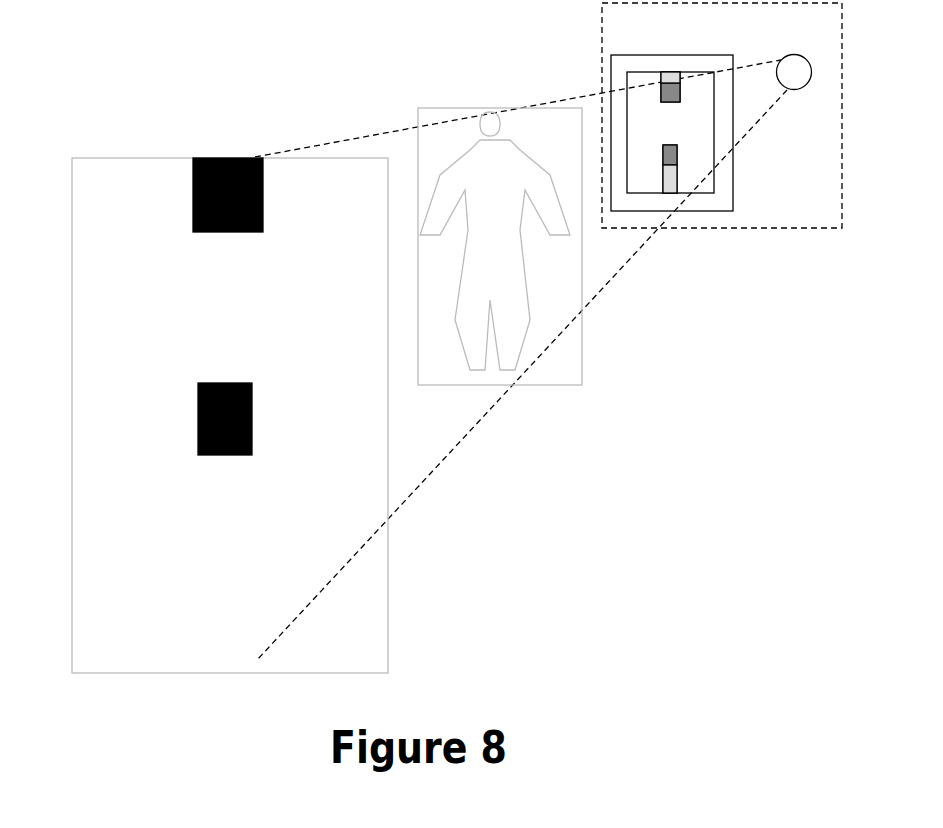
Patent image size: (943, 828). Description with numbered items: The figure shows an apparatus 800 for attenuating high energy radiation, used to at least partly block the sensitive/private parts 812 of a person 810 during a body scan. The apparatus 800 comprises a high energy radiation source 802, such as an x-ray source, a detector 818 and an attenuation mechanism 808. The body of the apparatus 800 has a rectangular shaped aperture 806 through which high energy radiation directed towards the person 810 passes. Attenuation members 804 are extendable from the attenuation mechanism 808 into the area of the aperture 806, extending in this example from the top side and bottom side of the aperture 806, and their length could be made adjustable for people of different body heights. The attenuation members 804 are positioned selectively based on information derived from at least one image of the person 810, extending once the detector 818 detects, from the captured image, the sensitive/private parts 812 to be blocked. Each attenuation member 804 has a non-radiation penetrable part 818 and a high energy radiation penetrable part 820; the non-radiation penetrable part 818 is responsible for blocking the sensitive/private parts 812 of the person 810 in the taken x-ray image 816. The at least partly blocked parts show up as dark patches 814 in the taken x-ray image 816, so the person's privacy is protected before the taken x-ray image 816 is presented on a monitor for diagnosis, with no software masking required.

The apparatus 800 is at (765, 228).
The high energy radiation source 802 is at (802, 88).
The attenuation members 804 is at (677, 157).
The aperture 806 is at (697, 133).
The attenuation mechanism 808 is at (697, 211).
The person 810 is at (475, 323).
The sensitive/private parts 812 is at (488, 243).
The dark patches 814 is at (202, 383).
The taken x-ray image 816 is at (160, 662).
The non-radiation penetrable part 818 is at (663, 157).
The high energy radiation penetrable part 820 is at (667, 75).